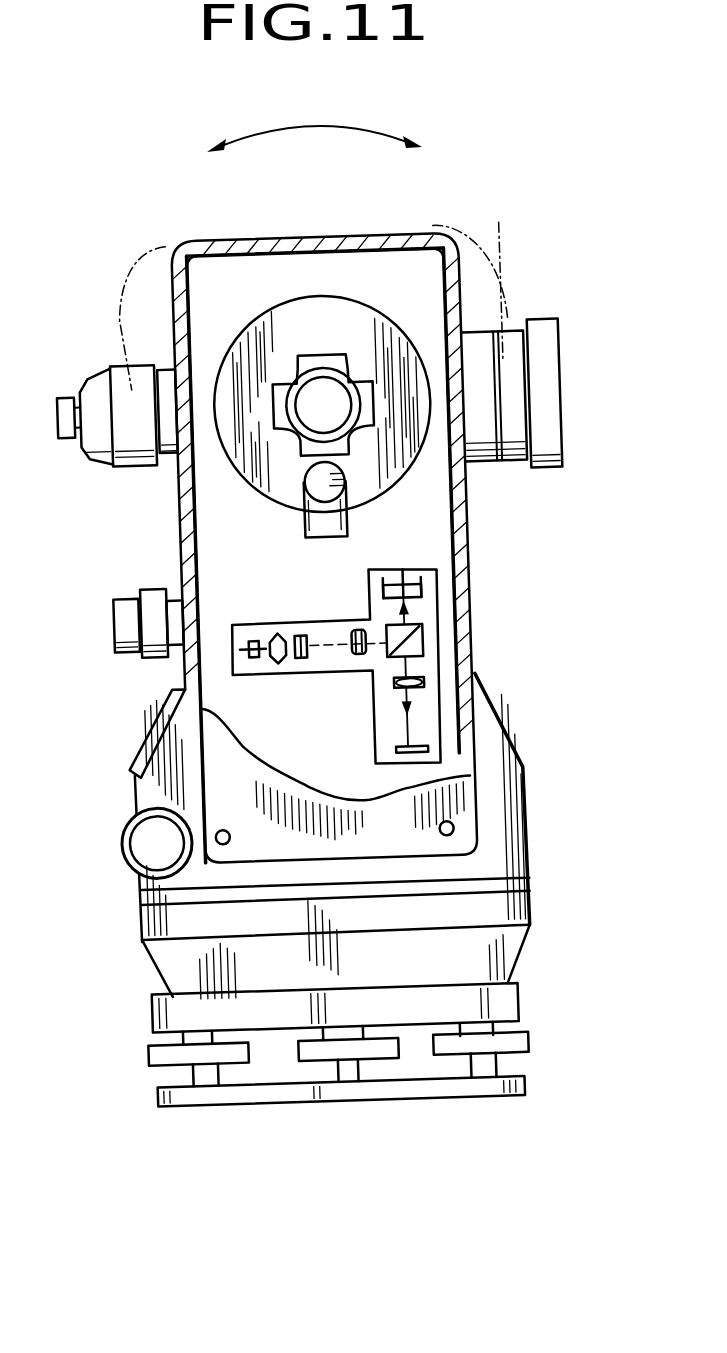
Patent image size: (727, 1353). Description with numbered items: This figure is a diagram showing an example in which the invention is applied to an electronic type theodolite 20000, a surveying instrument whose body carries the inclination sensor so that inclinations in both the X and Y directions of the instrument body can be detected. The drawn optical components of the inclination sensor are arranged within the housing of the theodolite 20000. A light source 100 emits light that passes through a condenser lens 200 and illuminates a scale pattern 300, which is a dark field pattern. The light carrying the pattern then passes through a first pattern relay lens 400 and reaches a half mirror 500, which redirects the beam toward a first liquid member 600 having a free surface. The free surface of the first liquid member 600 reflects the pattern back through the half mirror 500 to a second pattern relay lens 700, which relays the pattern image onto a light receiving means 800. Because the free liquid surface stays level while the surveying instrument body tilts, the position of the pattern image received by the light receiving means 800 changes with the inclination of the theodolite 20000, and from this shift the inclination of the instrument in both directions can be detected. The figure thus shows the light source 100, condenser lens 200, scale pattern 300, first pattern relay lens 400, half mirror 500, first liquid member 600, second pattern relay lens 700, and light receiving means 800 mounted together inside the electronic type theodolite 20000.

The light source 100 is at (252, 640).
The condenser lens 200 is at (278, 660).
The scale pattern 300 is at (301, 633).
The first pattern relay lens 400 is at (357, 655).
The half mirror 500 is at (423, 640).
The first liquid member 600 is at (437, 583).
The second pattern relay lens 700 is at (423, 682).
The light receiving means 800 is at (425, 750).
The electronic type theodolite 20000 is at (572, 1175).